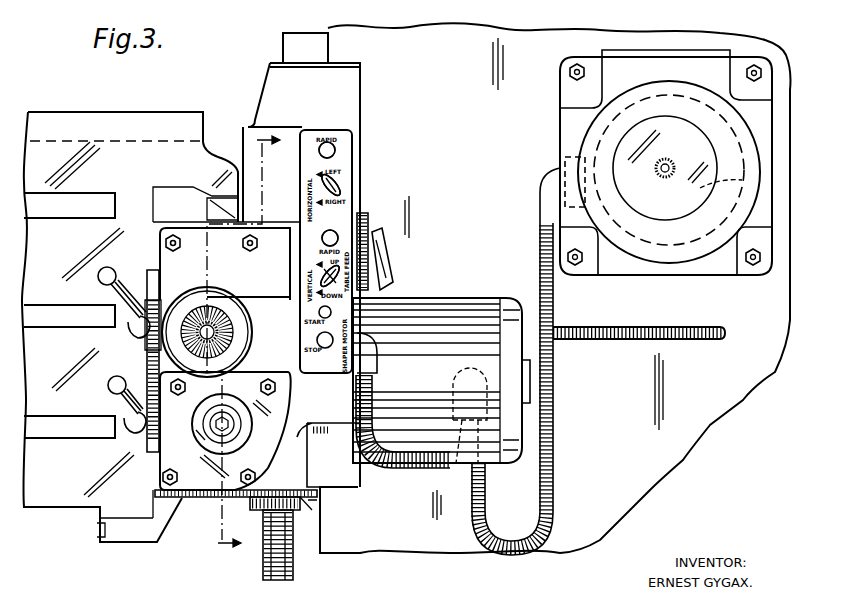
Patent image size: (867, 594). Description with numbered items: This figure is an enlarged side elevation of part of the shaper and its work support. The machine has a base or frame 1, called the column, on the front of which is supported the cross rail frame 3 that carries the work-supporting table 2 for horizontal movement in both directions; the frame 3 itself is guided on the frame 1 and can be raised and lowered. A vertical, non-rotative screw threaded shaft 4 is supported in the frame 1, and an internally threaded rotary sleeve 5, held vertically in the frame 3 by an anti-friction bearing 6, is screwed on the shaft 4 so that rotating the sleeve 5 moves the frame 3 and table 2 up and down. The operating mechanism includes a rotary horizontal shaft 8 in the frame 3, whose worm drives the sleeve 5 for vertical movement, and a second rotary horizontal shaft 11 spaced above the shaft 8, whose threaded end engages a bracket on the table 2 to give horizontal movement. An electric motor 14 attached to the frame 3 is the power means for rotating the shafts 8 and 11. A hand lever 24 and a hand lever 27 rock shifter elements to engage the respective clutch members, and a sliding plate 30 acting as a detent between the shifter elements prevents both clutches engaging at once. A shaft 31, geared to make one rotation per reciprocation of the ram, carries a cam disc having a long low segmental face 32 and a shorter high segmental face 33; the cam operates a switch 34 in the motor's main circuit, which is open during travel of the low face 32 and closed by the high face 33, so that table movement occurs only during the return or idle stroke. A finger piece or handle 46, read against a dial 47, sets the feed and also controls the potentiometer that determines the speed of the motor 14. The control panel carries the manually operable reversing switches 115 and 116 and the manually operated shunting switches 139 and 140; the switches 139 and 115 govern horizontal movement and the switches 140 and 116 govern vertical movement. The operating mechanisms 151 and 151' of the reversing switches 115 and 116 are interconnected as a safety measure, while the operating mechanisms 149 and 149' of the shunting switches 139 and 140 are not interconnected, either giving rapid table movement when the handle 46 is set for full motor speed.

The base or frame 1 is at (460, 33).
The work-supporting table 2 is at (86, 137).
The frame (cross rail) 3 is at (270, 103).
The screw threaded shaft 4 is at (237, 574).
The internally threaded rotary sleeve 5 is at (300, 509).
The anti-friction bearing 6 is at (317, 506).
The rotary horizontal shaft 8 is at (230, 430).
The rotary horizontal shaft 11 is at (213, 337).
The electric motor 14 is at (468, 313).
The hand lever 24 is at (110, 388).
The hand lever 27 is at (105, 280).
The sliding plate 30 is at (152, 380).
The shaft 31 is at (667, 165).
The low segmental face 32 is at (652, 240).
The high segmental face 33 is at (700, 188).
The switch 34 is at (565, 170).
The finger piece or handle 46 is at (393, 278).
The dial 47 is at (370, 232).
The manually operable reversing switch 115 is at (342, 187).
The manually operable reversing switch 116 is at (323, 273).
The manually operated shunting switch 139 is at (338, 149).
The manually operated shunting switch 140 is at (320, 232).
The operating mechanism 149 is at (322, 128).
The operating mechanism 149' is at (298, 245).
The operating mechanism 151 is at (362, 181).
The operating mechanism 151' is at (372, 317).